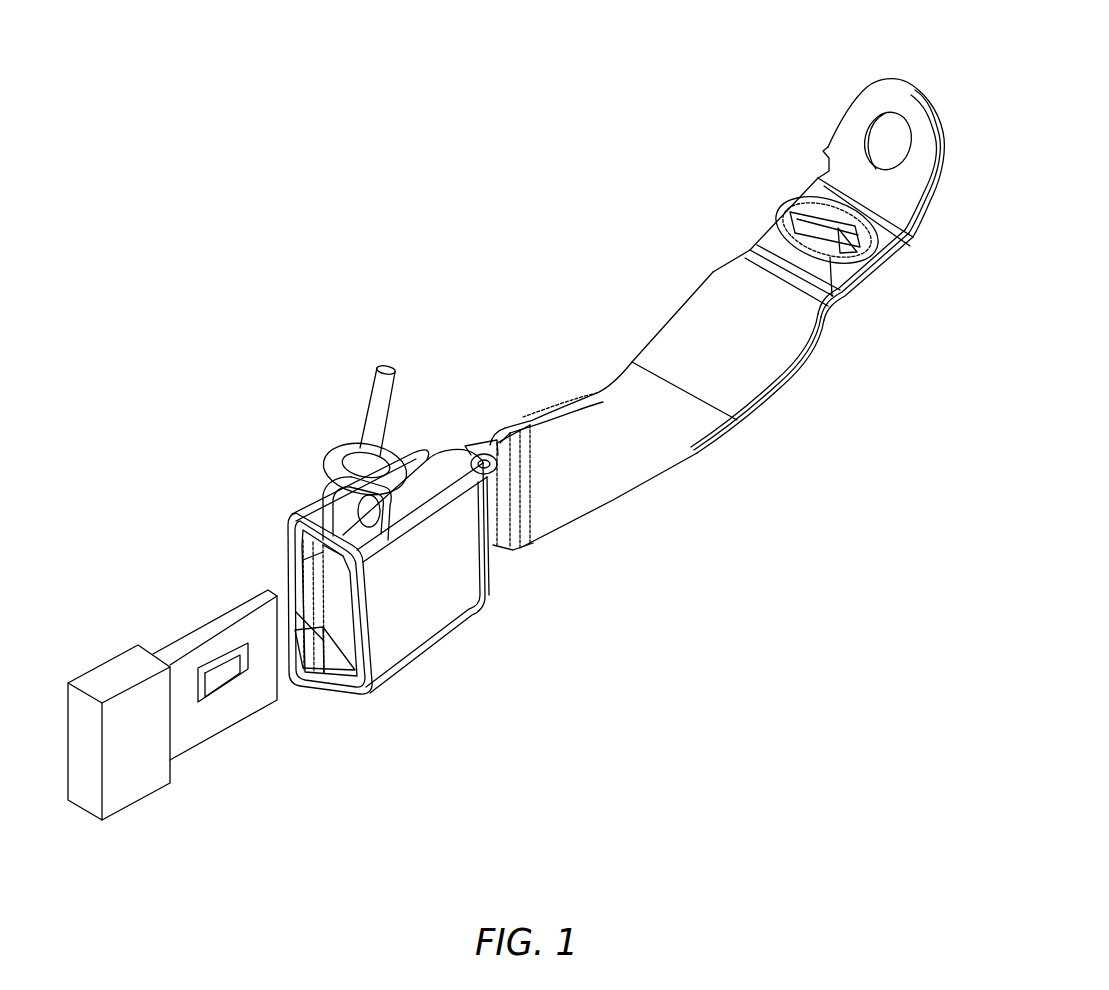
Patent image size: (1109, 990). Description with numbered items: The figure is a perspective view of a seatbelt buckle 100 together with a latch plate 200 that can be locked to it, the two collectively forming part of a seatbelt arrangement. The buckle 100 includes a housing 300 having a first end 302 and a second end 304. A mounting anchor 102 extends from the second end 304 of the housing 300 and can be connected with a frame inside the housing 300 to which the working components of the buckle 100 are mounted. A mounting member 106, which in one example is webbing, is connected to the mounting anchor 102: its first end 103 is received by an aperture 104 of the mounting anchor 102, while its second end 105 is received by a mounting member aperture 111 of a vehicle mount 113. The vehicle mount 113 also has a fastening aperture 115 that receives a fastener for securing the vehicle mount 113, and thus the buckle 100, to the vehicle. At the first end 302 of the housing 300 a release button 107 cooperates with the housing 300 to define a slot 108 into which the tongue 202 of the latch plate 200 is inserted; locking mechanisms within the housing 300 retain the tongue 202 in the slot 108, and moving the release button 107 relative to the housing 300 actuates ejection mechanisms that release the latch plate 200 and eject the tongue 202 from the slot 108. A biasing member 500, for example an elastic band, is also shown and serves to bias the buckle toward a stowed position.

The buckle 100 is at (410, 569).
The mounting anchor 102 is at (482, 457).
The first end 103 is at (518, 406).
The aperture 104 is at (493, 483).
The second end 105 is at (779, 194).
The mounting member 106 is at (670, 420).
The release button 107 is at (333, 650).
The slot 108 is at (318, 636).
The mounting member aperture 111 is at (858, 237).
The vehicle mount 113 is at (925, 232).
The fastening aperture 115 is at (889, 128).
The latch plate 200 is at (181, 734).
The tongue 202 is at (223, 716).
The housing 300 is at (430, 620).
The first end 302 is at (332, 704).
The second end 304 is at (507, 588).
The biasing member 500 is at (374, 404).